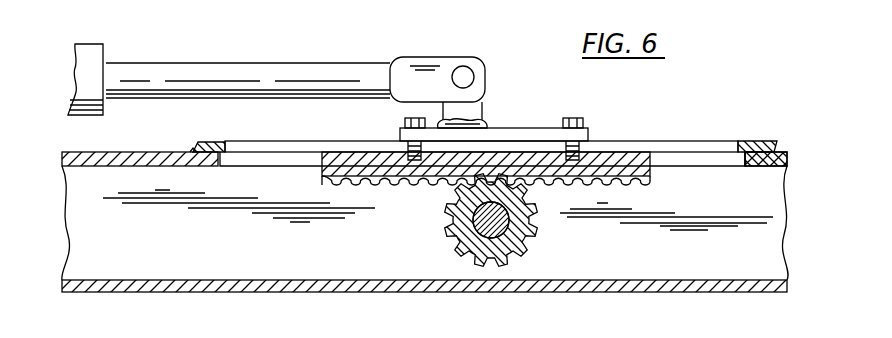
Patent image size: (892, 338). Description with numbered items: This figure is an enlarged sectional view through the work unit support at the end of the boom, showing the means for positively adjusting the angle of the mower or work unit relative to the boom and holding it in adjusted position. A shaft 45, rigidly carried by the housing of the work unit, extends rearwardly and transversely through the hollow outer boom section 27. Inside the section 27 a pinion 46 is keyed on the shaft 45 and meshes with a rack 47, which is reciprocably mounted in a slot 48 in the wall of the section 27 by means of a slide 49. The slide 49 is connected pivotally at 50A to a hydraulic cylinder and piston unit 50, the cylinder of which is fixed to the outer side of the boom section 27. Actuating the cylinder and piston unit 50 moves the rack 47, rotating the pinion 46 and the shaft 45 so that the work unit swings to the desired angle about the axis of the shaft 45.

The outer section 27 is at (362, 292).
The shaft 45 is at (490, 218).
The pinion 46 is at (522, 242).
The rack 47 is at (625, 180).
The slot 48 is at (693, 160).
The slide 49 is at (533, 128).
The hydraulic cylinder and piston unit 50 is at (93, 62).
The pivotal connection 50A is at (466, 76).